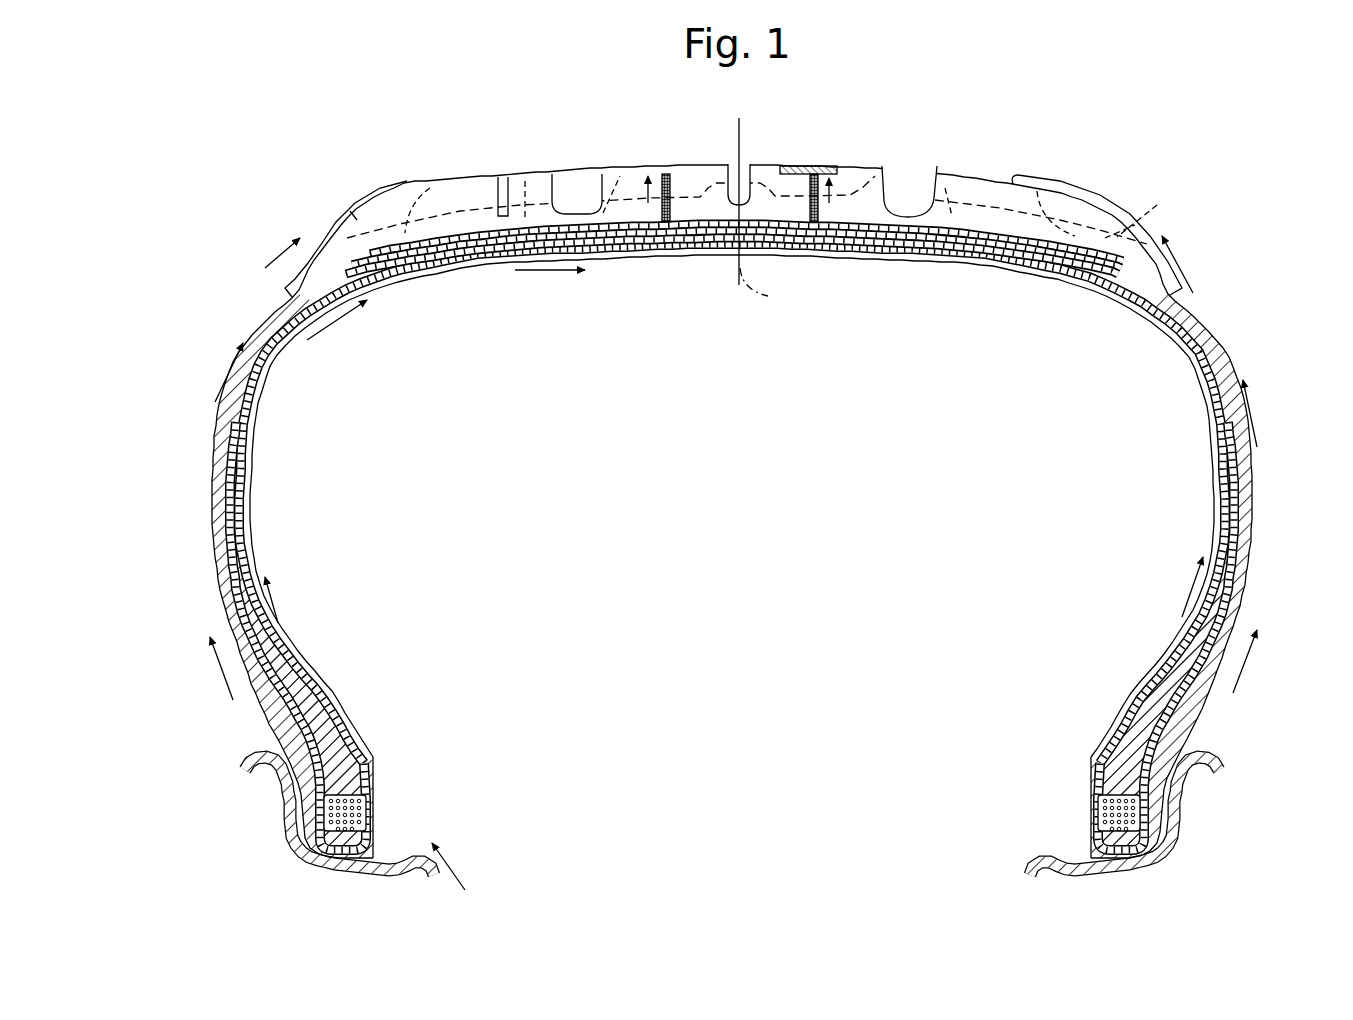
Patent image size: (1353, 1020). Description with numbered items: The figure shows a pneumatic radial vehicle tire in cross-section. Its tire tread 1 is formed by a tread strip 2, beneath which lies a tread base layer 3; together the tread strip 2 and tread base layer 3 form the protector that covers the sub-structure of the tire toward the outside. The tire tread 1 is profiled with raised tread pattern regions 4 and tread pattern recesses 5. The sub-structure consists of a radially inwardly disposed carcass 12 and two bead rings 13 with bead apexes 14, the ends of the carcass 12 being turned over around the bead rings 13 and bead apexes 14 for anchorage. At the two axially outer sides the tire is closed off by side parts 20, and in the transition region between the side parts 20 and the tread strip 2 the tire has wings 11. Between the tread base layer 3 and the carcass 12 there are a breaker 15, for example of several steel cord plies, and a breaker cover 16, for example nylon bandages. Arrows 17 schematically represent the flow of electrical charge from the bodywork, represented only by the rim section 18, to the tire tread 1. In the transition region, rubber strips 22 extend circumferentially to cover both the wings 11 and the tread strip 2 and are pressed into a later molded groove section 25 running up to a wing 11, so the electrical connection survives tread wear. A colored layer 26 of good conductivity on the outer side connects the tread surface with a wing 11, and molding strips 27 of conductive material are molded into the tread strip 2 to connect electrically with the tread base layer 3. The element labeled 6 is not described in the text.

The tire tread 1 is at (705, 163).
The tread strip 2 is at (460, 198).
The tread base layer 3 is at (529, 201).
The raised tread pattern region 4 is at (613, 181).
The tread pattern recess 5 is at (743, 175).
The conductive insert 6 is at (662, 176).
The wing 11 is at (290, 294).
The carcass 12 is at (503, 268).
The bead ring 13 is at (372, 813).
The bead apex 14 is at (347, 733).
The breaker 15 is at (953, 247).
The breaker cover 16 is at (403, 225).
The arrows 17 is at (283, 270).
The rim section 18 is at (293, 813).
The side part 20 is at (212, 543).
The rubber strip 22 is at (355, 206).
The groove section 25 is at (1145, 213).
The colored layer 26 is at (1067, 190).
The molding strip 27 is at (818, 168).